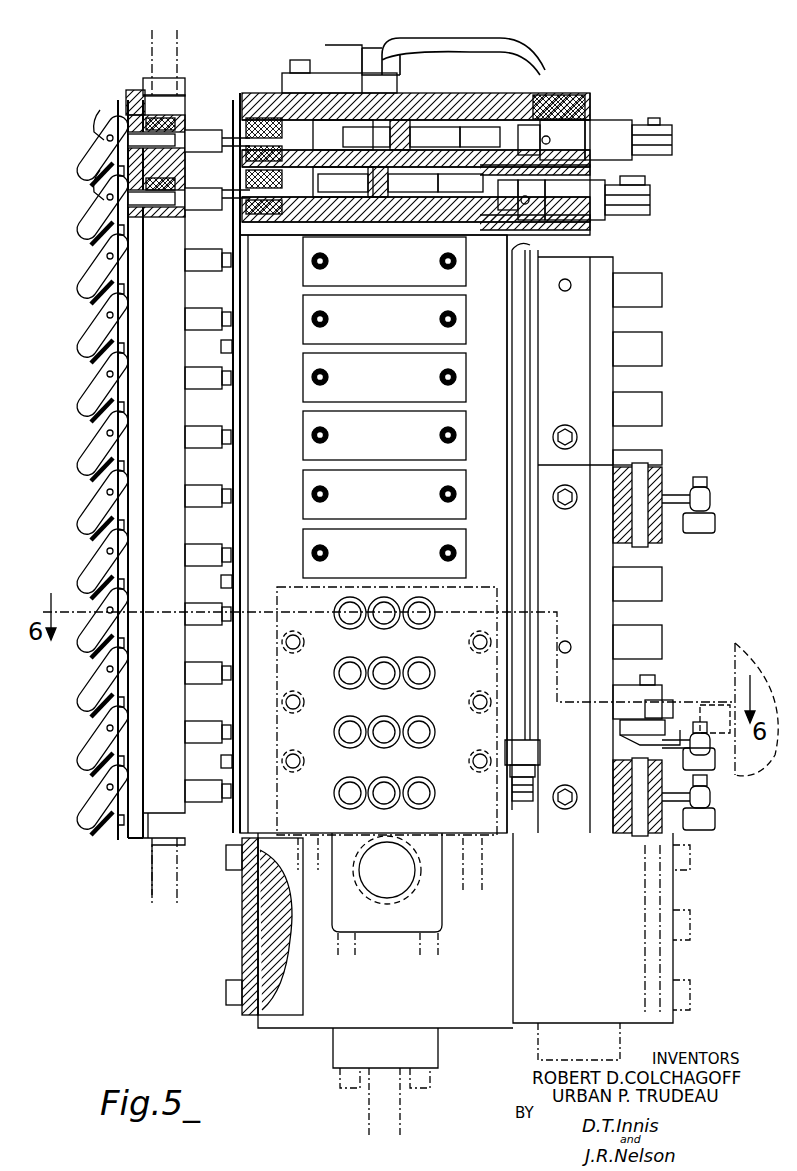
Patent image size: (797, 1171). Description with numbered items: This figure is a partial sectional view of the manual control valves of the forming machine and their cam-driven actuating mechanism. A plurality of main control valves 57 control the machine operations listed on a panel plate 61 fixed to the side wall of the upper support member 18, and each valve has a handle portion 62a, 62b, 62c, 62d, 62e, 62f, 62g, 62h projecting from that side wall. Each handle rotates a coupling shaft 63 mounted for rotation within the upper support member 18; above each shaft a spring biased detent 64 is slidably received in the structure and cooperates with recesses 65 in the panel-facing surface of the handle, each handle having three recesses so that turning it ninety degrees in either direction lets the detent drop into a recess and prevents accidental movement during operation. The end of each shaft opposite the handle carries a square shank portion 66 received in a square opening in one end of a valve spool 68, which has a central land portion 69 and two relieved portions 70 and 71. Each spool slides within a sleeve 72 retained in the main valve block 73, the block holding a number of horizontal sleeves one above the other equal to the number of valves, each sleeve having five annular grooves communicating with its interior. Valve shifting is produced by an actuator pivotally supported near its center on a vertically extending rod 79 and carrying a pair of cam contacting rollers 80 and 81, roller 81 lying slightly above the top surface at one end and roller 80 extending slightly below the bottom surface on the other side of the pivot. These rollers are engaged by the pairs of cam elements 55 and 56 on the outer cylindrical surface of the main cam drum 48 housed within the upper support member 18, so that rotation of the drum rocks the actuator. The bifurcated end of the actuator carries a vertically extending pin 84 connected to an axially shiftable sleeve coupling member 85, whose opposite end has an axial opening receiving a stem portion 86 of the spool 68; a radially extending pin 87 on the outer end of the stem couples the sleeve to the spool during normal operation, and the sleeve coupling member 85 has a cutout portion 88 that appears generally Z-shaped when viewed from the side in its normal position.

The upper support member 18 is at (160, 66).
The main cam drum 48 is at (740, 650).
The cam element 55 is at (715, 705).
The cam element 56 is at (740, 762).
The main control valves 57 is at (80, 322).
The panel plate 61 is at (124, 836).
The handle portion 62a is at (95, 160).
The handle portion 62b is at (92, 402).
The handle portion 62c is at (92, 458).
The handle portion 62d is at (92, 516).
The handle portion 62e is at (92, 574).
The handle portion 62f is at (88, 612).
The handle portion 62g is at (95, 747).
The handle portion 62h is at (95, 805).
The coupling shaft 63 is at (172, 142).
The spring biased detent 64 is at (150, 118).
The recess 65 is at (138, 95).
The square shank portion 66 is at (246, 128).
The valve spool 68 is at (500, 98).
The central land portion 69 is at (400, 136).
The relieved portion 70 is at (362, 122).
The relieved portion 71 is at (430, 140).
The sleeve 72 is at (298, 165).
The main valve block 73 is at (282, 466).
The vertically extending rod 79 is at (652, 545).
The cam contacting roller 80 is at (700, 760).
The cam contacting roller 81 is at (665, 705).
The vertically extending pin 84 is at (660, 137).
The sleeve coupling member 85 is at (610, 124).
The stem portion 86 is at (516, 136).
The radially extending pin 87 is at (556, 140).
The cutout portion 88 is at (562, 128).